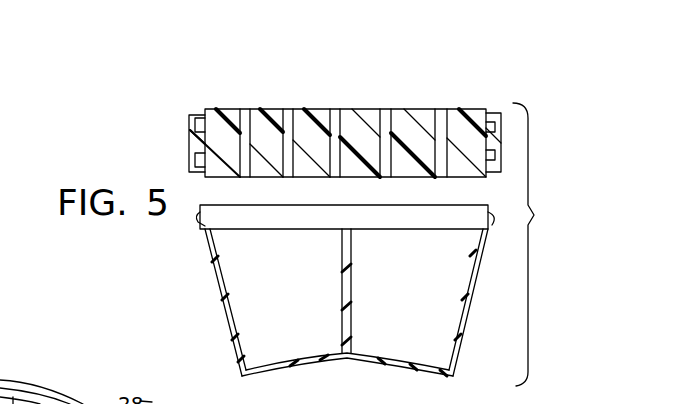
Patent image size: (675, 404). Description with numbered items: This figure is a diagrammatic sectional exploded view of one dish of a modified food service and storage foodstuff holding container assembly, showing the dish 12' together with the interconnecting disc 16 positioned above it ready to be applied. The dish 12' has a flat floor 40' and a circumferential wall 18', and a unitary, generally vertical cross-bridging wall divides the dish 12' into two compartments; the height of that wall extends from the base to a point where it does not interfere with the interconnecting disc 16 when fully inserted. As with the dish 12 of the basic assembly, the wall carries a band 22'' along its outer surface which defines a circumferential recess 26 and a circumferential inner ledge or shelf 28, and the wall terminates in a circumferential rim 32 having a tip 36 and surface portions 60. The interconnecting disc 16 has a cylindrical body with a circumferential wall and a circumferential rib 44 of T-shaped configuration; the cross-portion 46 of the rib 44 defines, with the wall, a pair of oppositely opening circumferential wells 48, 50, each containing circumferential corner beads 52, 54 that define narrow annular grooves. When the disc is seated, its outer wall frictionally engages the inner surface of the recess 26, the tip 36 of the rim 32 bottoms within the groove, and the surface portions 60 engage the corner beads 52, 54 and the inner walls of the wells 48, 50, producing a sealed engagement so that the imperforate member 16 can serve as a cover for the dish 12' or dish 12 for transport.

The open-faced dish 12 is at (549, 244).
The interconnecting disc 16 is at (323, 109).
The circumferential recess 26 is at (314, 231).
The circumferential ledge or shelf 28 is at (393, 224).
The circumferential rim 32 is at (486, 232).
The tip of the rim 36 is at (50, 398).
The circumferential rib 44 is at (493, 120).
The cross-portion of the rib 46 is at (189, 138).
The circumferential well 48 is at (200, 118).
The circumferential well 50 is at (194, 172).
The circumferential corner bead 52 is at (487, 113).
The circumferential corner bead 54 is at (500, 172).
The surface portions of the rims 60 is at (192, 115).
The band 22'' is at (198, 302).
The dish 12' is at (208, 298).
The circumferential wall 18' is at (211, 357).
The flat floor 40' is at (347, 375).